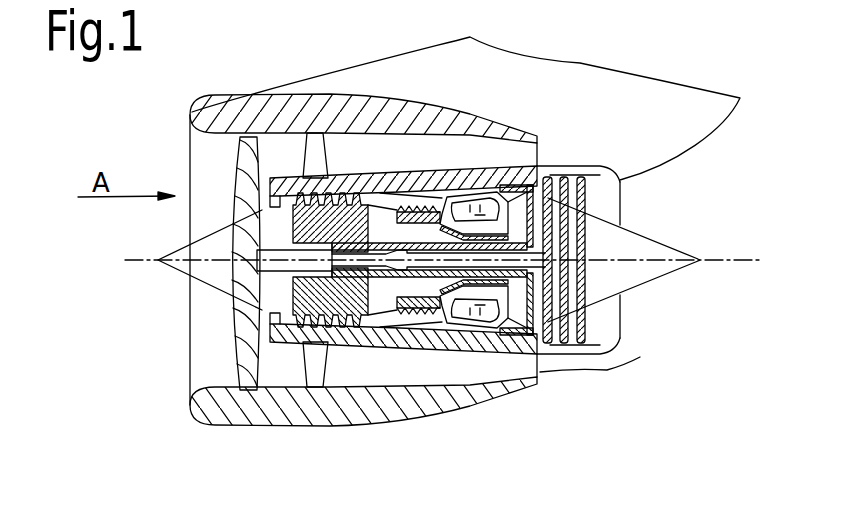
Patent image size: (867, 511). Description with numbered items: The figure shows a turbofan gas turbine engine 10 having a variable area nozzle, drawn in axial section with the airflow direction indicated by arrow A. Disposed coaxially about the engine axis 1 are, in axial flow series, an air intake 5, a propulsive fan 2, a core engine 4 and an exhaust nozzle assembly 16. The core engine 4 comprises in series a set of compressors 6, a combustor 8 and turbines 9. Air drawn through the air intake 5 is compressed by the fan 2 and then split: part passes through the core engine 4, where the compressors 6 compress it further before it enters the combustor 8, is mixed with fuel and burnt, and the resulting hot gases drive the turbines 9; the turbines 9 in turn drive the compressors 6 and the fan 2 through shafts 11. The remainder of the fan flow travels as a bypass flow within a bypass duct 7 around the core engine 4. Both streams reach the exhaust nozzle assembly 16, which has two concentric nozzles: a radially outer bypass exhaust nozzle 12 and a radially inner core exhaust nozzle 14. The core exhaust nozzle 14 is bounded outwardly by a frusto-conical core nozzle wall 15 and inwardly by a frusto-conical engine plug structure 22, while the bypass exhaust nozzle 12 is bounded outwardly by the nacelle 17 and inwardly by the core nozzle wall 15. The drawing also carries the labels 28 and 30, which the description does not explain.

The engine axis 1 is at (157, 260).
The propulsive fan 2 is at (240, 186).
The core engine 4 is at (350, 341).
The air intake 5 is at (205, 158).
The compressors 6 is at (366, 337).
The bypass duct 7 is at (323, 156).
The combustor 8 is at (478, 318).
The turbines 9 is at (548, 178).
The turbofan gas turbine engine 10 is at (180, 409).
The shafts 11 is at (418, 240).
The bypass exhaust nozzle 12 is at (538, 381).
The core exhaust nozzle 14 is at (620, 180).
The core nozzle wall 15 is at (588, 166).
The exhaust nozzle assembly 16 is at (640, 357).
The nacelle 17 is at (467, 125).
The engine plug structure 22 is at (690, 251).
The bypass duct 28 is at (474, 165).
The core nozzle 30 is at (602, 203).